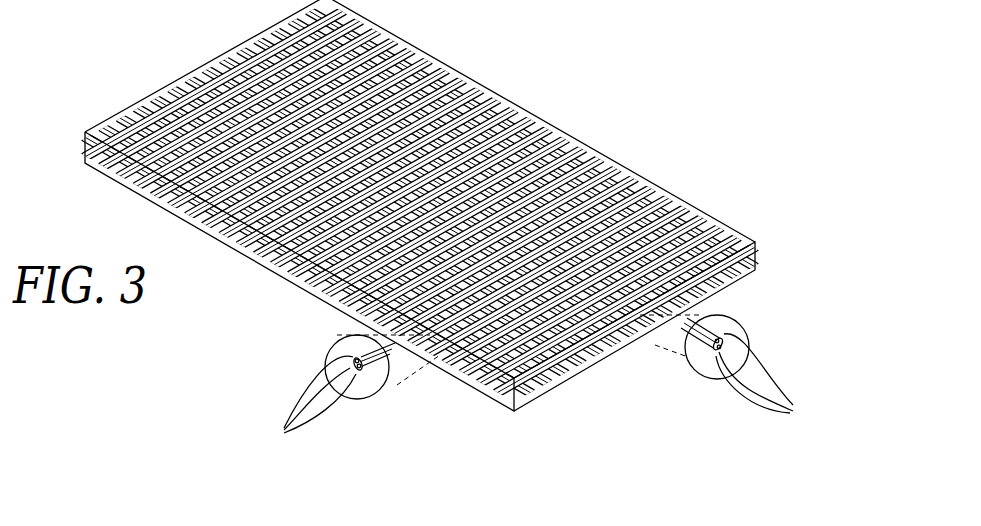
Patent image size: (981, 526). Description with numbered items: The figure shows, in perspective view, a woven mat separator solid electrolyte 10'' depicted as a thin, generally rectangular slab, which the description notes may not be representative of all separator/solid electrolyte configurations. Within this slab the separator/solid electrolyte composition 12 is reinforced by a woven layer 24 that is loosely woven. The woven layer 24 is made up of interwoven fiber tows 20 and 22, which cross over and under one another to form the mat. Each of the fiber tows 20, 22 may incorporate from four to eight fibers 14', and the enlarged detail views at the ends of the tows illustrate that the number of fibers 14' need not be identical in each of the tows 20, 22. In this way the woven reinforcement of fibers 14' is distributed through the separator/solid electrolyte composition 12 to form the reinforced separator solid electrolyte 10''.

The woven mat separator solid electrolyte 10'' is at (449, 205).
The separator/solid electrolyte composition 12 is at (662, 207).
The fibers 14' is at (538, 379).
The fiber tow 20 is at (725, 296).
The fiber tow 22 is at (280, 289).
The woven layer 24 is at (152, 69).